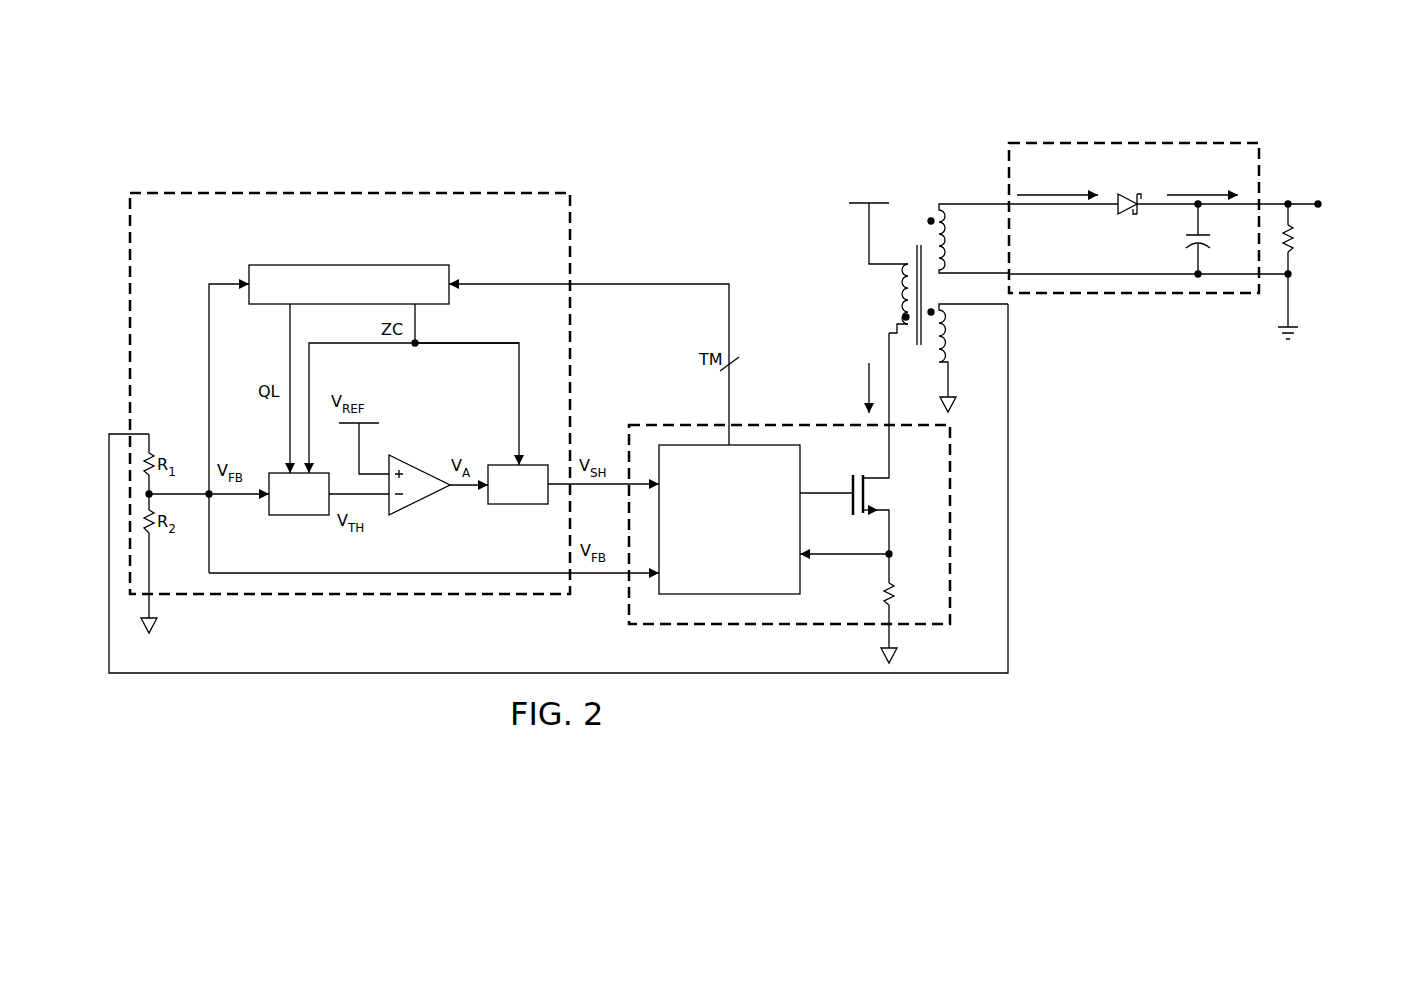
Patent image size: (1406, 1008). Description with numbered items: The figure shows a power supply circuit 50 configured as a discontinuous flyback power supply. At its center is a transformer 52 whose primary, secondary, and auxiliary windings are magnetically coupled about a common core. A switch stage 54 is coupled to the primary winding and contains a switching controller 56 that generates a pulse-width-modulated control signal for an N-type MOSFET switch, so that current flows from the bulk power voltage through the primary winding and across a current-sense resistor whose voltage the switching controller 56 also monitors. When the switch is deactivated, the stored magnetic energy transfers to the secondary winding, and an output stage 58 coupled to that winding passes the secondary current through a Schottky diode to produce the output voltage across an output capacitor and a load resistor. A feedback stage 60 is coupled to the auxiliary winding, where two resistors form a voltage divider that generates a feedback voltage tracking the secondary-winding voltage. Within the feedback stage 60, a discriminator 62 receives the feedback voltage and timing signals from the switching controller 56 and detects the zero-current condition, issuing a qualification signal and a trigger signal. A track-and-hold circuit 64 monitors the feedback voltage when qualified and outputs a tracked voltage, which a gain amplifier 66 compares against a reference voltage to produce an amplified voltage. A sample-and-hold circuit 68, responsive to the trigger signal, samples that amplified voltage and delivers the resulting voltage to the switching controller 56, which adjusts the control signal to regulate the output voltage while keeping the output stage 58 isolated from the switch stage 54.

The power supply circuit 50 is at (346, 82).
The transformer 52 is at (852, 245).
The switch stage 54 is at (678, 423).
The switching controller 56 is at (729, 519).
The output stage 58 is at (1186, 142).
The feedback stage 60 is at (203, 191).
The discriminator 62 is at (348, 264).
The track-and-hold circuit 64 is at (297, 517).
The gain amplifier 66 is at (411, 465).
The sample-and-hold circuit 68 is at (500, 506).